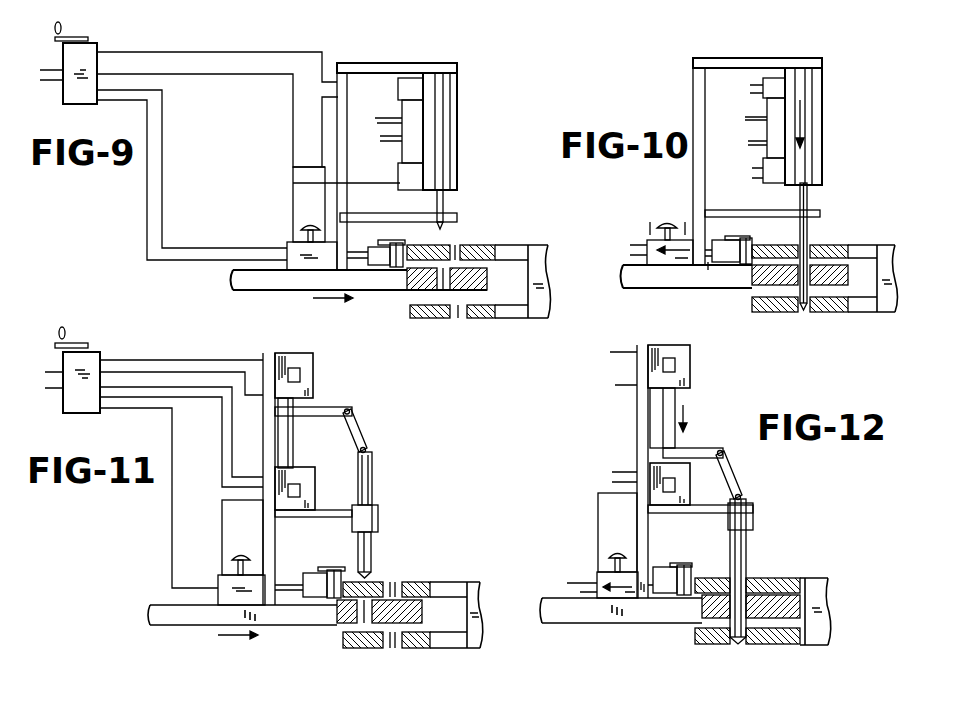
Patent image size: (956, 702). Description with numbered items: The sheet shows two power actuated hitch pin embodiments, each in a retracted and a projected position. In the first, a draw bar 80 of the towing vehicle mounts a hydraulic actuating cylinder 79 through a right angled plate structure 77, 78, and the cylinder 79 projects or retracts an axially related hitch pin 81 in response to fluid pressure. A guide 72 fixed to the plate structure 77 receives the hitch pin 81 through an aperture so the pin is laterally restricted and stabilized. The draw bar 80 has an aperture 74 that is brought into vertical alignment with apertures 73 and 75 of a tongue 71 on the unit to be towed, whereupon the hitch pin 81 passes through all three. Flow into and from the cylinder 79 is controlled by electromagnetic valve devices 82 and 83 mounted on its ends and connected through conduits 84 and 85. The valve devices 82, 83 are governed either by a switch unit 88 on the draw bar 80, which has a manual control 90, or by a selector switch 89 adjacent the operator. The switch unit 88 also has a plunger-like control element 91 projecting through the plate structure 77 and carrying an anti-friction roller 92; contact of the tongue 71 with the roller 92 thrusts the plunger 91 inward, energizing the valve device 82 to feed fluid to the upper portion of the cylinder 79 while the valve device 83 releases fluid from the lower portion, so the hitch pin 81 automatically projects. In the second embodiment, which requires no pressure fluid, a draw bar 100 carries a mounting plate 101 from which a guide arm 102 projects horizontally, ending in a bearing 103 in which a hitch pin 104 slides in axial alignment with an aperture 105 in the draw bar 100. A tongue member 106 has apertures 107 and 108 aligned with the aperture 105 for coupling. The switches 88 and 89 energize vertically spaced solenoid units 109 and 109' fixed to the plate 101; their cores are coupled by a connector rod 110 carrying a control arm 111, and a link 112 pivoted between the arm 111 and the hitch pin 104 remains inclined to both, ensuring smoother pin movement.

In FIG. 9, the tongue 71 is at (539, 322).
In FIG. 10, the tongue 71 is at (886, 240).
In FIG. 9, the guide 72 is at (458, 218).
In FIG. 10, the guide 72 is at (820, 213).
In FIG. 9, the aperture 73 is at (462, 250).
In FIG. 10, the aperture 73 is at (825, 248).
In FIG. 9, the aperture 74 is at (447, 292).
In FIG. 10, the aperture 74 is at (795, 270).
In FIG. 9, the aperture 75 is at (463, 318).
In FIG. 10, the aperture 75 is at (785, 312).
In FIG. 9, the plate structure 77 is at (340, 128).
In FIG. 9, the plate structure 78 is at (385, 63).
In FIG. 10, the plate structure 78 is at (745, 58).
In FIG. 9, the hydraulic actuating cylinder 79 is at (457, 102).
In FIG. 10, the hydraulic actuating cylinder 79 is at (822, 101).
In FIG. 9, the draw bar 80 is at (233, 278).
In FIG. 10, the draw bar 80 is at (620, 262).
In FIG. 9, the hitch pin 81 is at (448, 205).
In FIG. 10, the hitch pin 81 is at (804, 312).
In FIG. 9, the electromagnetic valve device 82 is at (412, 86).
In FIG. 10, the electromagnetic valve device 82 is at (778, 83).
In FIG. 9, the electromagnetic valve device 83 is at (400, 180).
In FIG. 10, the electromagnetic valve device 83 is at (785, 168).
In FIG. 9, the conduit 84 is at (388, 118).
In FIG. 10, the conduit 84 is at (750, 117).
In FIG. 9, the conduit 85 is at (392, 138).
In FIG. 10, the conduit 85 is at (750, 143).
In FIG. 9, the switch unit 88 is at (305, 265).
In FIG. 10, the switch unit 88 is at (665, 255).
In FIG. 11, the switch unit 88 is at (222, 578).
In FIG. 12, the switch unit 88 is at (598, 577).
In FIG. 9, the selector switch 89 is at (72, 50).
In FIG. 11, the selector switch 89 is at (90, 355).
In FIG. 9, the manual control 90 is at (300, 232).
In FIG. 10, the manual control 90 is at (668, 224).
In FIG. 11, the manual control 90 is at (247, 558).
In FIG. 12, the manual control 90 is at (623, 555).
In FIG. 9, the plunger-like control element 91 is at (358, 258).
In FIG. 10, the plunger-like control element 91 is at (708, 258).
In FIG. 11, the plunger-like control element 91 is at (292, 588).
In FIG. 12, the plunger-like control element 91 is at (645, 602).
In FIG. 9, the anti-friction roller 92 is at (392, 250).
In FIG. 10, the anti-friction roller 92 is at (745, 240).
In FIG. 11, the anti-friction roller 92 is at (330, 572).
In FIG. 12, the anti-friction roller 92 is at (682, 567).
In FIG. 11, the draw bar 100 is at (150, 625).
In FIG. 12, the draw bar 100 is at (550, 617).
In FIG. 11, the mounting plate 101 is at (267, 453).
In FIG. 12, the mounting plate 101 is at (642, 418).
In FIG. 11, the guide arm 102 is at (333, 510).
In FIG. 12, the guide arm 102 is at (715, 513).
In FIG. 11, the bearing 103 is at (380, 520).
In FIG. 12, the bearing 103 is at (753, 522).
In FIG. 11, the hitch pin 104 is at (370, 477).
In FIG. 12, the hitch pin 104 is at (747, 548).
In FIG. 11, the aperture 105 is at (348, 627).
In FIG. 12, the aperture 105 is at (702, 607).
In FIG. 11, the tongue member 106 is at (475, 578).
In FIG. 12, the tongue member 106 is at (832, 575).
In FIG. 11, the aperture 107 is at (397, 580).
In FIG. 12, the aperture 107 is at (753, 580).
In FIG. 11, the aperture 108 is at (410, 640).
In FIG. 12, the aperture 108 is at (723, 647).
In FIG. 11, the solenoid unit 109 is at (307, 358).
In FIG. 12, the solenoid unit 109 is at (674, 353).
In FIG. 11, the solenoid unit 109' is at (315, 476).
In FIG. 12, the solenoid unit 109' is at (643, 472).
In FIG. 11, the connector rod 110 is at (292, 432).
In FIG. 12, the connector rod 110 is at (672, 402).
In FIG. 11, the control arm 111 is at (328, 407).
In FIG. 12, the control arm 111 is at (703, 450).
In FIG. 11, the link 112 is at (363, 430).
In FIG. 12, the link 112 is at (733, 470).